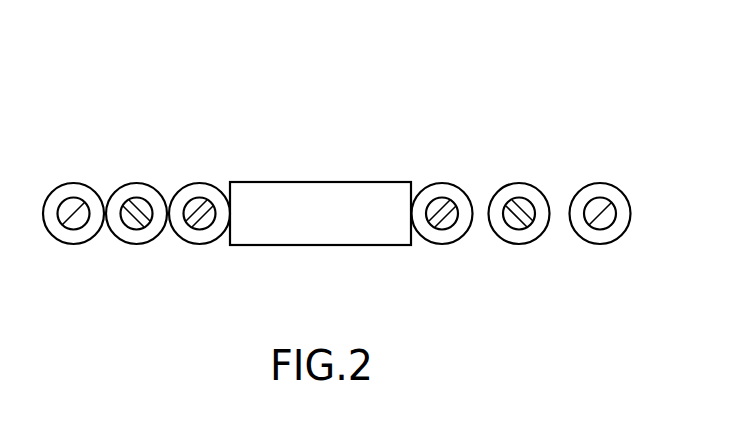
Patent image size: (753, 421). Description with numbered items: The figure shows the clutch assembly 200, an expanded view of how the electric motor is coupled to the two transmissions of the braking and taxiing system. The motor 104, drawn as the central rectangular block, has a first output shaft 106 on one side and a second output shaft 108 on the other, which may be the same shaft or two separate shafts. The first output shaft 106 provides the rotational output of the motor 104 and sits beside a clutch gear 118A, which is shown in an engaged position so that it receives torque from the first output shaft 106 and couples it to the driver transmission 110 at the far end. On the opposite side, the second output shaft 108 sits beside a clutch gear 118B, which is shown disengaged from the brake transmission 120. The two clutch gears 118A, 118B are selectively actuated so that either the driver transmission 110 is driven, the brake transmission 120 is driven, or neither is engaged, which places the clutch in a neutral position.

The clutch assembly 200 is at (517, 50).
The driver transmission 110 is at (80, 181).
The clutch gear 118A is at (144, 181).
The first output shaft 106 is at (202, 181).
The motor 104 is at (320, 181).
The second output shaft 108 is at (451, 181).
The clutch gear 118B is at (530, 181).
The brake transmission 120 is at (605, 181).